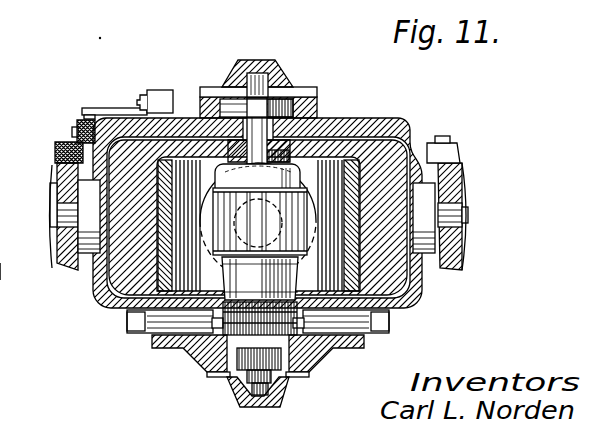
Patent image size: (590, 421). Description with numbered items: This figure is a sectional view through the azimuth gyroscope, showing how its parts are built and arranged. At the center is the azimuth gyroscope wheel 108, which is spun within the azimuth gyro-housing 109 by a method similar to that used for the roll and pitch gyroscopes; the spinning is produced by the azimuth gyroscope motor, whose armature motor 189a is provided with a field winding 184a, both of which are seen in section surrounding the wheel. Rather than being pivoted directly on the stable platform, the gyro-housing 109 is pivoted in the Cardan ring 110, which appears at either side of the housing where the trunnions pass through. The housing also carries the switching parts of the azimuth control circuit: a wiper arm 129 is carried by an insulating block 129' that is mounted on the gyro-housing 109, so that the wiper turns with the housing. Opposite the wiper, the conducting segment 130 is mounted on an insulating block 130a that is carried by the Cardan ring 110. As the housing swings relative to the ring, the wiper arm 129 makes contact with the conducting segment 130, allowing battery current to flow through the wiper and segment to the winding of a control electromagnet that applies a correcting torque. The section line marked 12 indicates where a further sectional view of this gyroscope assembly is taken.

The section line 12- 12 is at (58, 89).
The azimuth gyroscope wheel 108 is at (410, 138).
The azimuth gyro-housing 109 is at (358, 119).
The Cardan ring 110 is at (450, 272).
The wiper arm 129 is at (114, 88).
The insulating block 129' is at (172, 84).
The conducting segment 130 is at (80, 120).
The insulating block 130a is at (58, 165).
The field winding 184a is at (334, 187).
The armature motor 189a is at (212, 250).